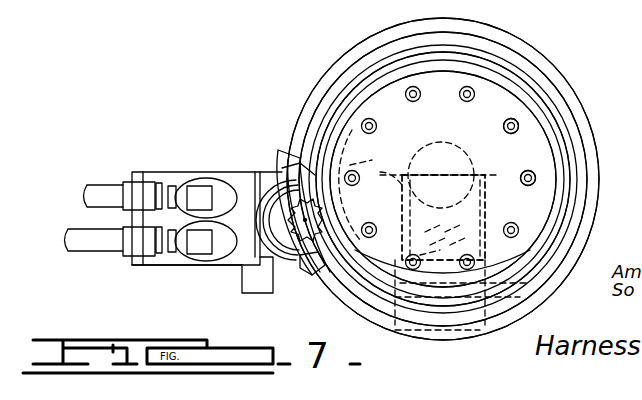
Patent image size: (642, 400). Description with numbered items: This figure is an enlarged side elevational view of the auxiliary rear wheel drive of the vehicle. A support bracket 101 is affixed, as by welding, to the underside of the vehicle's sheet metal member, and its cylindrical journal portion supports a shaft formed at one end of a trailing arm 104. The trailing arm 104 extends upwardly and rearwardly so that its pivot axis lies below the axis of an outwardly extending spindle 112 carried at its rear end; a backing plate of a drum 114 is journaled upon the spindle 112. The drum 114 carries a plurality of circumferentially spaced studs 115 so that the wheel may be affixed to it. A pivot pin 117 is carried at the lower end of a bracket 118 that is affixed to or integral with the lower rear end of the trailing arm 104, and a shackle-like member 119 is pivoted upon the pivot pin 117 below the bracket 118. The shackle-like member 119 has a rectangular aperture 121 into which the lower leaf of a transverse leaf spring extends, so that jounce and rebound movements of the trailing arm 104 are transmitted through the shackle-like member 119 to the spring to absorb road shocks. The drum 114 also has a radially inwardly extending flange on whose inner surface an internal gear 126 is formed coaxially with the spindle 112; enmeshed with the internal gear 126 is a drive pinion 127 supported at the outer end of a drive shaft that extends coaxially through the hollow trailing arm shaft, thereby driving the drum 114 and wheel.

The support bracket 101 is at (242, 277).
The trailing arm 104 is at (392, 158).
The spindle 112 is at (440, 178).
The drum 114 is at (518, 40).
The studs 115 is at (530, 176).
The pivot pin 117 is at (562, 208).
The bracket 118 is at (490, 200).
The shackle-like member 119 is at (553, 280).
The rectangular aperture 121 is at (347, 310).
The internal gear 126 is at (313, 263).
The drive pinion 127 is at (282, 168).